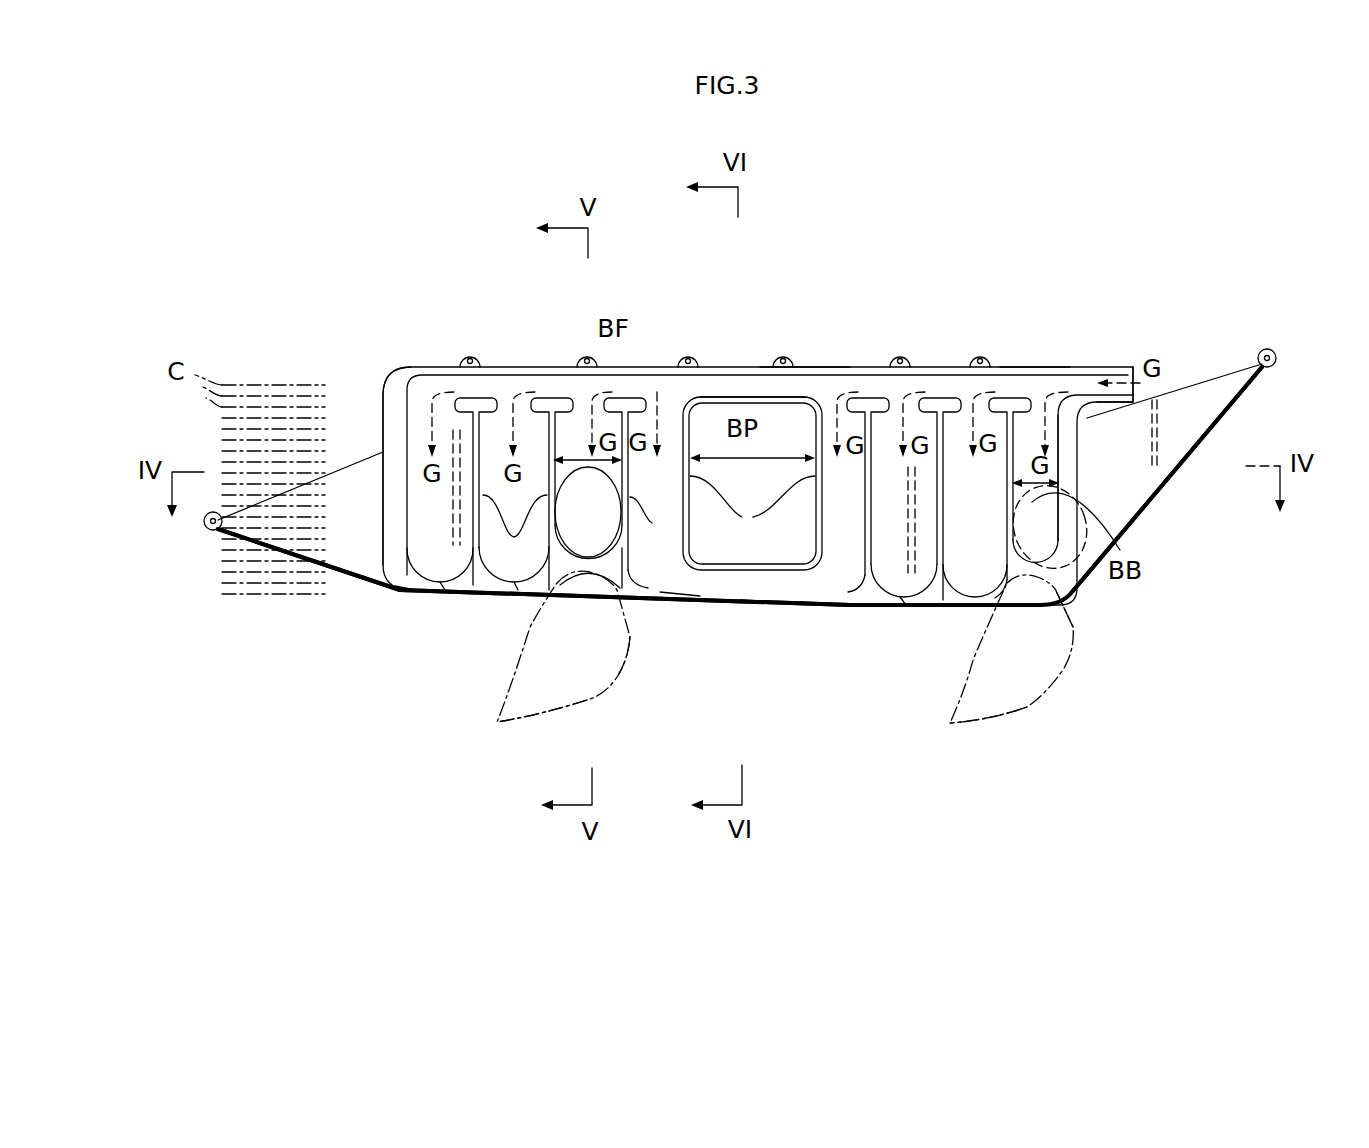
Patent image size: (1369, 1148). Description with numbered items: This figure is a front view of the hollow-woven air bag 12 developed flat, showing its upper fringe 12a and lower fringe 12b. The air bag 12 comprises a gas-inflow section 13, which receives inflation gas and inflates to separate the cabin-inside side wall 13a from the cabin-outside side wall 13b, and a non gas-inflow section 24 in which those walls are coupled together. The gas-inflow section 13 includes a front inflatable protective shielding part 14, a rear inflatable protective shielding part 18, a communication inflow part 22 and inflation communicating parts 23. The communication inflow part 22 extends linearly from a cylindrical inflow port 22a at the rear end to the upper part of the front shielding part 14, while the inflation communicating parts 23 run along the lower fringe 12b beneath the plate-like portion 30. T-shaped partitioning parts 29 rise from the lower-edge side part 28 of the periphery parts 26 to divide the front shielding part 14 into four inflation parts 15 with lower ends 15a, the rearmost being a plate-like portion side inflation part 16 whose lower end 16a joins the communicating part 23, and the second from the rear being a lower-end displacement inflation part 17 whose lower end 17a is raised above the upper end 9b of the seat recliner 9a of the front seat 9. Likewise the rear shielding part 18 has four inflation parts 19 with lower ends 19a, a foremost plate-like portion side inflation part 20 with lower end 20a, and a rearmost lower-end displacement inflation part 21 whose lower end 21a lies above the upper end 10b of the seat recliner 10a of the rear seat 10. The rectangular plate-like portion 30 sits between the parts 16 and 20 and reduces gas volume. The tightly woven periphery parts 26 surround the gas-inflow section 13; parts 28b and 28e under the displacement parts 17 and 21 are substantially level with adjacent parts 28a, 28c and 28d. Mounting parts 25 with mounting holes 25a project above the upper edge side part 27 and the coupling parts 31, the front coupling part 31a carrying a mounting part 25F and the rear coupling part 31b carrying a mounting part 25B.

The front seat 9 is at (478, 730).
The seat recliner 9a is at (585, 693).
The upper end 9b is at (610, 650).
The rear seat 10 is at (938, 725).
The seat recliner 10a is at (1060, 713).
The upper end 10b is at (1070, 627).
The air bag 12 is at (392, 302).
The upper fringe 12a is at (755, 392).
The lower fringe 12b is at (758, 602).
The gas-inflow section 13 is at (406, 398).
The cabin-inside side wall 13a is at (398, 590).
The cabin-outside side wall 13b is at (410, 578).
The front inflatable protective shielding part 14 is at (392, 444).
The inflation parts 15 is at (524, 398).
The lower ends 15a is at (447, 588).
The plate-like portion side inflation part 16 is at (650, 428).
The lower end 16a is at (680, 590).
The lower-end displacement inflation part 17 is at (588, 425).
The lower end 17a is at (580, 575).
The rear inflatable protective shielding part 18 is at (845, 605).
The inflation parts 19 is at (847, 468).
The lower ends 19a is at (905, 598).
The plate-like portion side inflation part 20 is at (867, 428).
The lower end 20a is at (815, 604).
The lower-end displacement inflation part 21 is at (1083, 424).
The lower end 21a is at (1082, 560).
The communication inflow part 22 is at (800, 372).
The inflow port 22a is at (1120, 390).
The inflation communicating parts 23 is at (727, 603).
The non gas-inflow section 24 is at (718, 372).
The mounting parts 25 is at (465, 360).
The mounting holes 25a is at (473, 358).
The mounting part 25B is at (1270, 350).
The mounting part 25F is at (204, 527).
The periphery parts 26 is at (752, 434).
The upper edge side part 27 is at (1033, 367).
The lower-edge side part 28 is at (473, 590).
The part of lower-edge side part 28a is at (520, 602).
The part of lower-edge side part 28b is at (596, 604).
The part of lower-edge side part 28c is at (638, 598).
The part of lower-edge side part 28d is at (988, 604).
The part of lower-edge side part 28e is at (1020, 604).
The partitioning parts 29 is at (579, 529).
The plate-like portion 30 is at (770, 444).
The coupling parts 31 is at (723, 583).
The front coupling part 31a is at (309, 589).
The rear coupling part 31b is at (1168, 479).